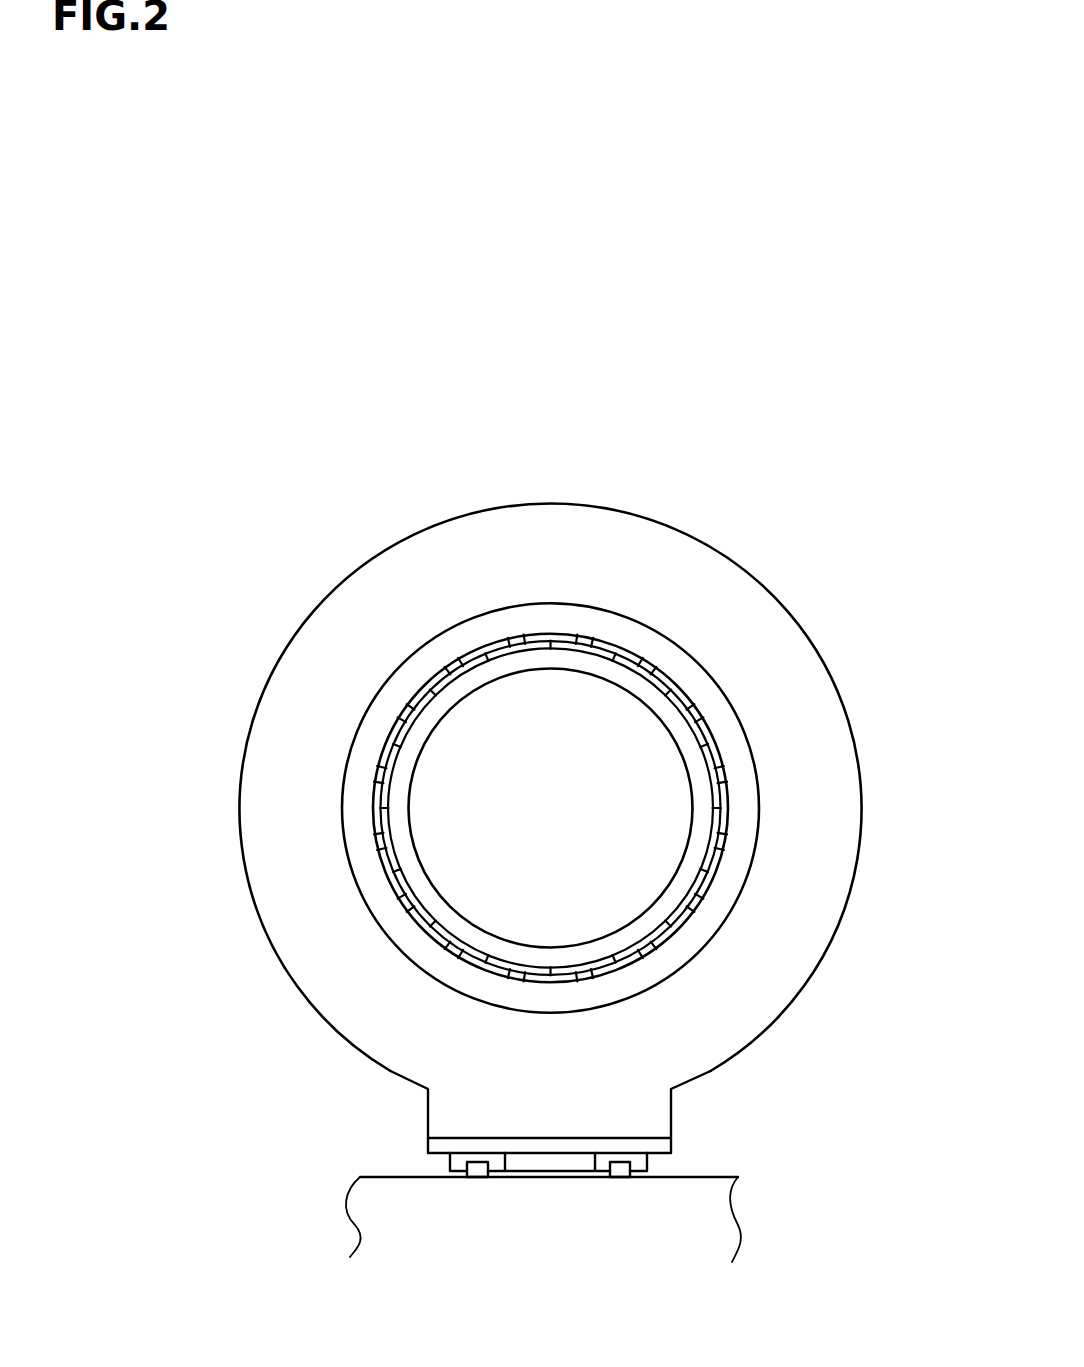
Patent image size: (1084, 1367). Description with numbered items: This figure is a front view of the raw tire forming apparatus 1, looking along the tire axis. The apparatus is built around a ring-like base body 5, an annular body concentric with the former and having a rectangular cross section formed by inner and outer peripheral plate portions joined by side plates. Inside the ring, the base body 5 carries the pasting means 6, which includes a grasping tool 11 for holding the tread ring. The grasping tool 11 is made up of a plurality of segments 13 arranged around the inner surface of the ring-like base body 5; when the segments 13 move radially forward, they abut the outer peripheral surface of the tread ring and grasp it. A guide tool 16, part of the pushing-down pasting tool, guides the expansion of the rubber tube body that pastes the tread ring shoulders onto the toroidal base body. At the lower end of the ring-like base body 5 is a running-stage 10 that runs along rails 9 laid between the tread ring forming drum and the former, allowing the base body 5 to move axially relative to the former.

The raw tire forming apparatus 1 is at (792, 541).
The ring-like base body 5 is at (579, 503).
The pasting means 6 is at (663, 727).
The guide tool 16 is at (740, 845).
The grasping tool 11 is at (659, 850).
The segments 13 is at (670, 930).
The running-stage 10 is at (630, 1137).
The rails 9 is at (621, 1178).